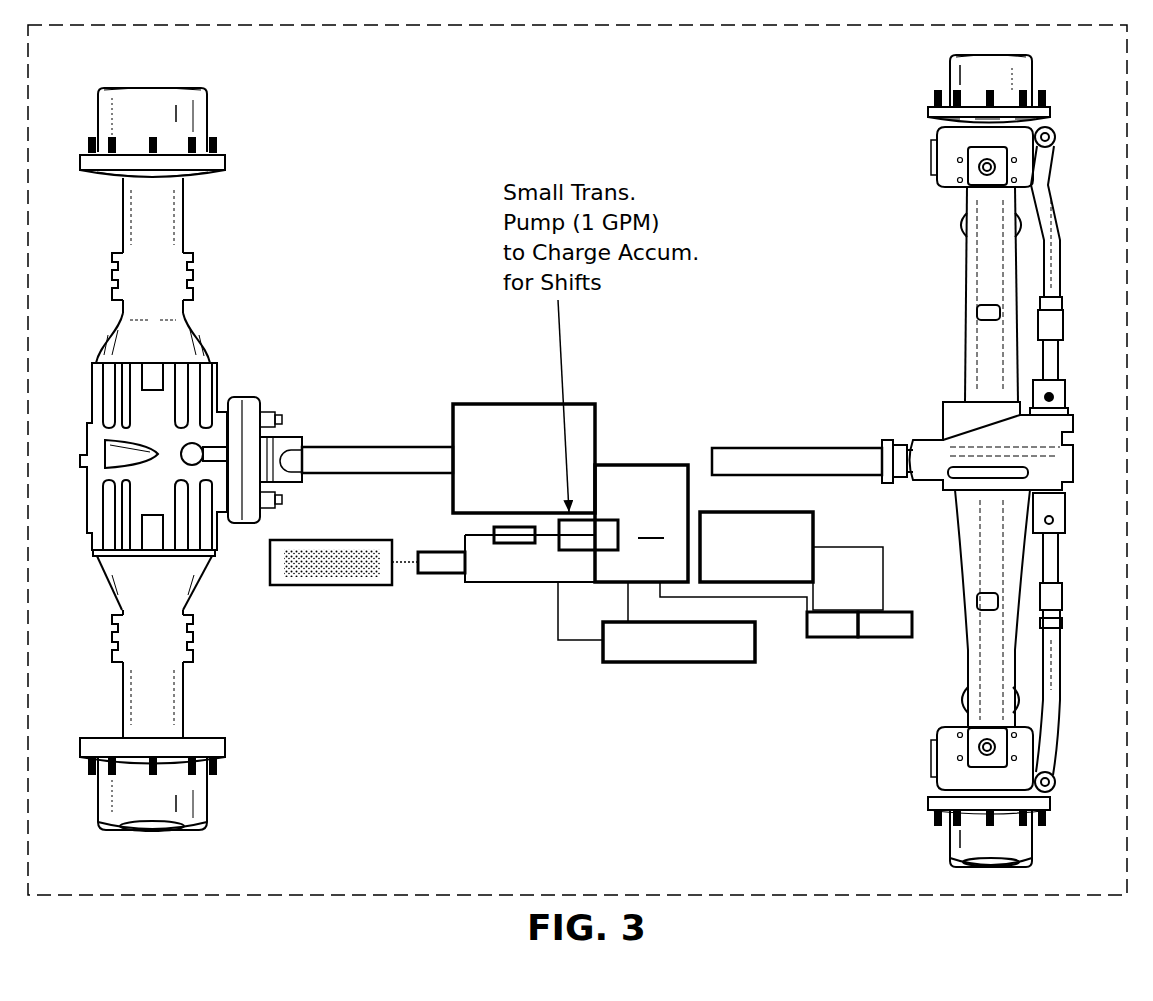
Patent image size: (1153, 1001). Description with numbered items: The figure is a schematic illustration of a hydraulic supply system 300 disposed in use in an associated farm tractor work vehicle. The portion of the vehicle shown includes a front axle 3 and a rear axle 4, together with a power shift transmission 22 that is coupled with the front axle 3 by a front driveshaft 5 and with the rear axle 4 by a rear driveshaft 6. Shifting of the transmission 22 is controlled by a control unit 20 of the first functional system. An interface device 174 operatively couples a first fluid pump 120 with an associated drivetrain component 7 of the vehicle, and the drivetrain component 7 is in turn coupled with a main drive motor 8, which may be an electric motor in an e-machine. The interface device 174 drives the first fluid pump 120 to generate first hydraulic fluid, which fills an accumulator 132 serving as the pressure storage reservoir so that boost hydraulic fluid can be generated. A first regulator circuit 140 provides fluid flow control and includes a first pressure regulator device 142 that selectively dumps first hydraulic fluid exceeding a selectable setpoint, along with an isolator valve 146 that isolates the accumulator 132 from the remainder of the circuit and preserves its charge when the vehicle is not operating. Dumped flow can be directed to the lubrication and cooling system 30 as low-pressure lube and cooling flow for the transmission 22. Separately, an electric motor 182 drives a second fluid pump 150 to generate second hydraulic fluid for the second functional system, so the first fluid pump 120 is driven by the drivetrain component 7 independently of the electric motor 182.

The front axle 3 is at (1088, 180).
The rear axle 4 is at (244, 122).
The front driveshaft 5 is at (800, 457).
The rear driveshaft 6 is at (403, 445).
The drivetrain component 7 is at (649, 487).
The main drive motor 8 is at (739, 515).
The control unit 20 is at (669, 470).
The power shift transmission 22 is at (496, 410).
The lubrication and cooling system 30 is at (883, 560).
The first fluid pump 120 is at (610, 464).
The accumulator 132 is at (322, 540).
The first regulator circuit 140 is at (678, 665).
The first pressure regulator device 142 is at (517, 544).
The isolator valve 146 is at (440, 574).
The second fluid pump 150 is at (887, 622).
The interface device 174 is at (582, 531).
The electric motor 182 is at (840, 614).
The hydraulic supply system 300 is at (368, 777).